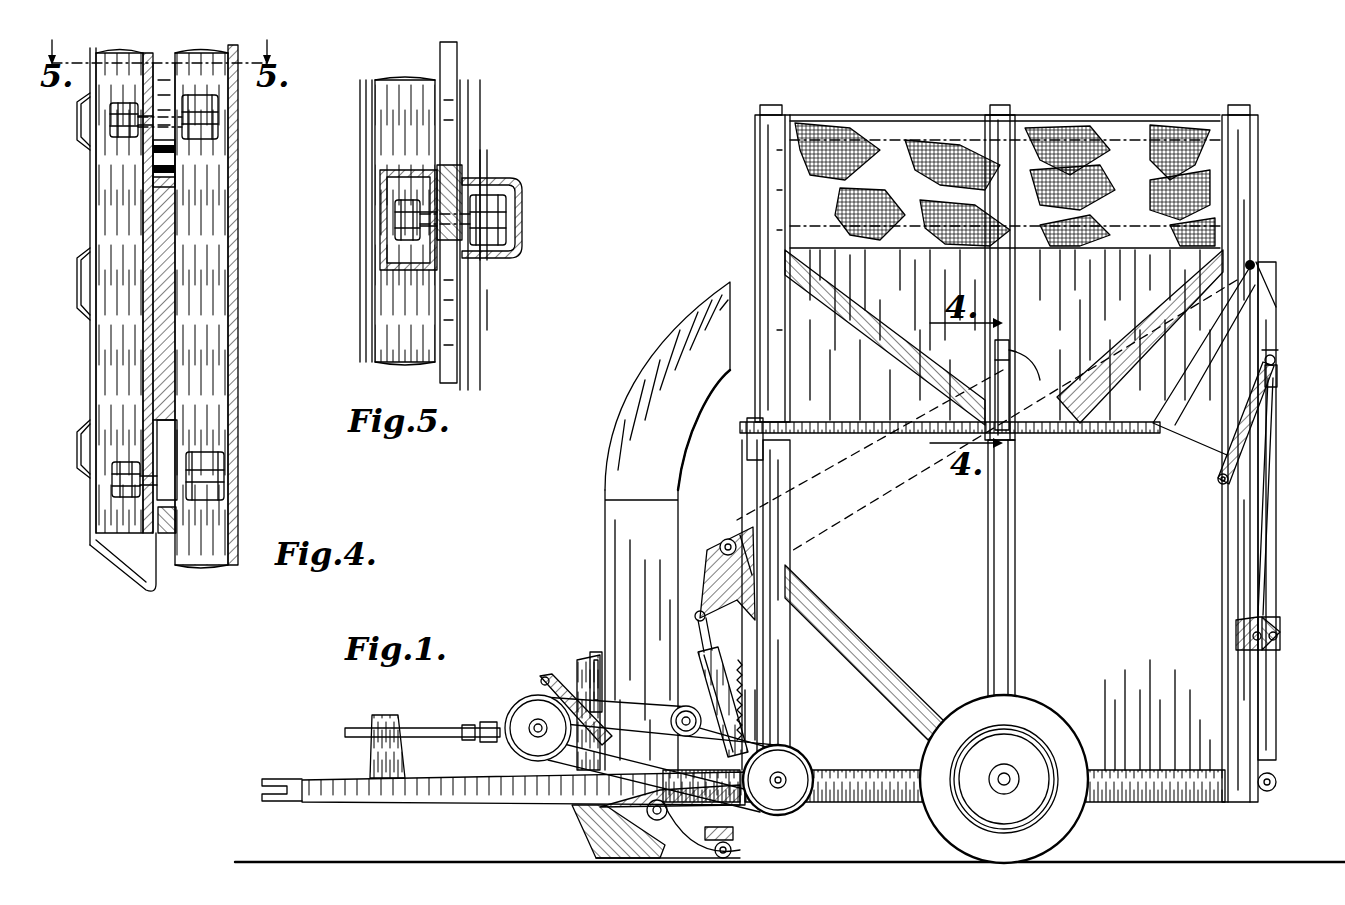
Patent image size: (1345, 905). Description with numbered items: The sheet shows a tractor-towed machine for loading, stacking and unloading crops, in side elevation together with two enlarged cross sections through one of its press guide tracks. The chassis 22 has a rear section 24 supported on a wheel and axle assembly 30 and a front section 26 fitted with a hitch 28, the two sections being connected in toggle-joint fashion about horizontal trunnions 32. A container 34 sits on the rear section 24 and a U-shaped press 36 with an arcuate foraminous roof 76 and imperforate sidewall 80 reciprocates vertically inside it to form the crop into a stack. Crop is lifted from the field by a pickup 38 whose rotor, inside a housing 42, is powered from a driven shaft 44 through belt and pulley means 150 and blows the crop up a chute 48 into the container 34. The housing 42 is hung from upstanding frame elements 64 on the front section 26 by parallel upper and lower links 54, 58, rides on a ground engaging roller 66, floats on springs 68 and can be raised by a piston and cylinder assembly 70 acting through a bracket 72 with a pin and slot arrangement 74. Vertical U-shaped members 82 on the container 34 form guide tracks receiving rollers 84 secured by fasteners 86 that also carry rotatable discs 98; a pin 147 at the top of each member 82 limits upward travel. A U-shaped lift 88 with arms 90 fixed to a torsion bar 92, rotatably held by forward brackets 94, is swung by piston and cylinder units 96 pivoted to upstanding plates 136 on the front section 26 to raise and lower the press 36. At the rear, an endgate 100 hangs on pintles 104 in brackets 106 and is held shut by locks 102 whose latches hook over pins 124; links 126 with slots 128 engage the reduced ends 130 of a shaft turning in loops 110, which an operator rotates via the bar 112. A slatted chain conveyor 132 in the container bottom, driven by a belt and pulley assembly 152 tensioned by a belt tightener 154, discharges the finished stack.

In FIG. 1, the chassis 22 is at (870, 810).
In FIG. 1, the rear section 24 is at (1165, 798).
In FIG. 1, the front section 26 is at (420, 793).
In FIG. 1, the hitch 28 is at (268, 778).
In FIG. 1, the wheel and axle assembly 30 is at (1086, 836).
In FIG. 1, the trunnions 32 is at (655, 790).
In FIG. 5, the container 34 is at (486, 312).
In FIG. 1, the container 34 is at (981, 427).
In FIG. 4, the press 36 is at (86, 324).
In FIG. 5, the press 36 is at (378, 365).
In FIG. 1, the press 36 is at (750, 172).
In FIG. 1, the pickup 38 is at (585, 860).
In FIG. 1, the housing 42 is at (690, 855).
In FIG. 1, the driven shaft 44 is at (418, 728).
In FIG. 1, the chute 48 is at (600, 488).
In FIG. 1, the upper link 54 is at (605, 730).
In FIG. 1, the lower link 58 is at (600, 812).
In FIG. 1, the upstanding frame elements 64 is at (540, 678).
In FIG. 1, the ground engaging roller means 66 is at (730, 856).
In FIG. 1, the flotation springs 68 is at (750, 816).
In FIG. 1, the fluid pressure piston and cylinder assembly 70 is at (580, 700).
In FIG. 1, the bracket means 72 is at (594, 652).
In FIG. 1, the pin and slot arrangement 74 is at (598, 672).
In FIG. 1, the roof 76 is at (895, 135).
In FIG. 4, the sidewall 80 is at (80, 275).
In FIG. 1, the sidewall 80 is at (1118, 262).
In FIG. 4, the intermediate member 82 is at (220, 355).
In FIG. 5, the intermediate member 82 is at (518, 190).
In FIG. 1, the intermediate member 82 is at (1005, 530).
In FIG. 4, the rollers 84 is at (212, 100).
In FIG. 5, the rollers 84 is at (505, 248).
In FIG. 4, the fasteners 86 is at (112, 128).
In FIG. 5, the fasteners 86 is at (398, 225).
In FIG. 1, the lift 88 is at (708, 548).
In FIG. 4, the arms 90 is at (165, 260).
In FIG. 5, the arms 90 is at (455, 372).
In FIG. 1, the arms 90 is at (905, 478).
In FIG. 1, the torsion bar 92 is at (722, 540).
In FIG. 1, the brackets 94 is at (750, 568).
In FIG. 1, the fluid pressure piston and cylinder units 96 is at (696, 648).
In FIG. 4, the rotatable discs 98 is at (178, 158).
In FIG. 5, the rotatable discs 98 is at (445, 175).
In FIG. 1, the rotatable discs 98 is at (1015, 352).
In FIG. 1, the endgate 100 is at (1268, 724).
In FIG. 1, the locks 102 is at (1268, 628).
In FIG. 1, the pintles 104 is at (1253, 264).
In FIG. 1, the brackets 106 is at (1178, 387).
In FIG. 1, the loops 110 is at (1272, 365).
In FIG. 1, the bar 112 is at (1218, 468).
In FIG. 1, the pins 124 is at (1270, 640).
In FIG. 1, the links 126 is at (1268, 515).
In FIG. 1, the slots 128 is at (1280, 382).
In FIG. 1, the reduced ends 130 is at (1277, 362).
In FIG. 1, the conveyor 132 is at (1278, 783).
In FIG. 1, the upstanding plates 136 is at (715, 805).
In FIG. 1, the pin 147 is at (995, 347).
In FIG. 1, the belt and pulley means 150 is at (505, 705).
In FIG. 1, the belt and pulley assembly 152 is at (768, 730).
In FIG. 1, the belt tightener 154 is at (680, 708).